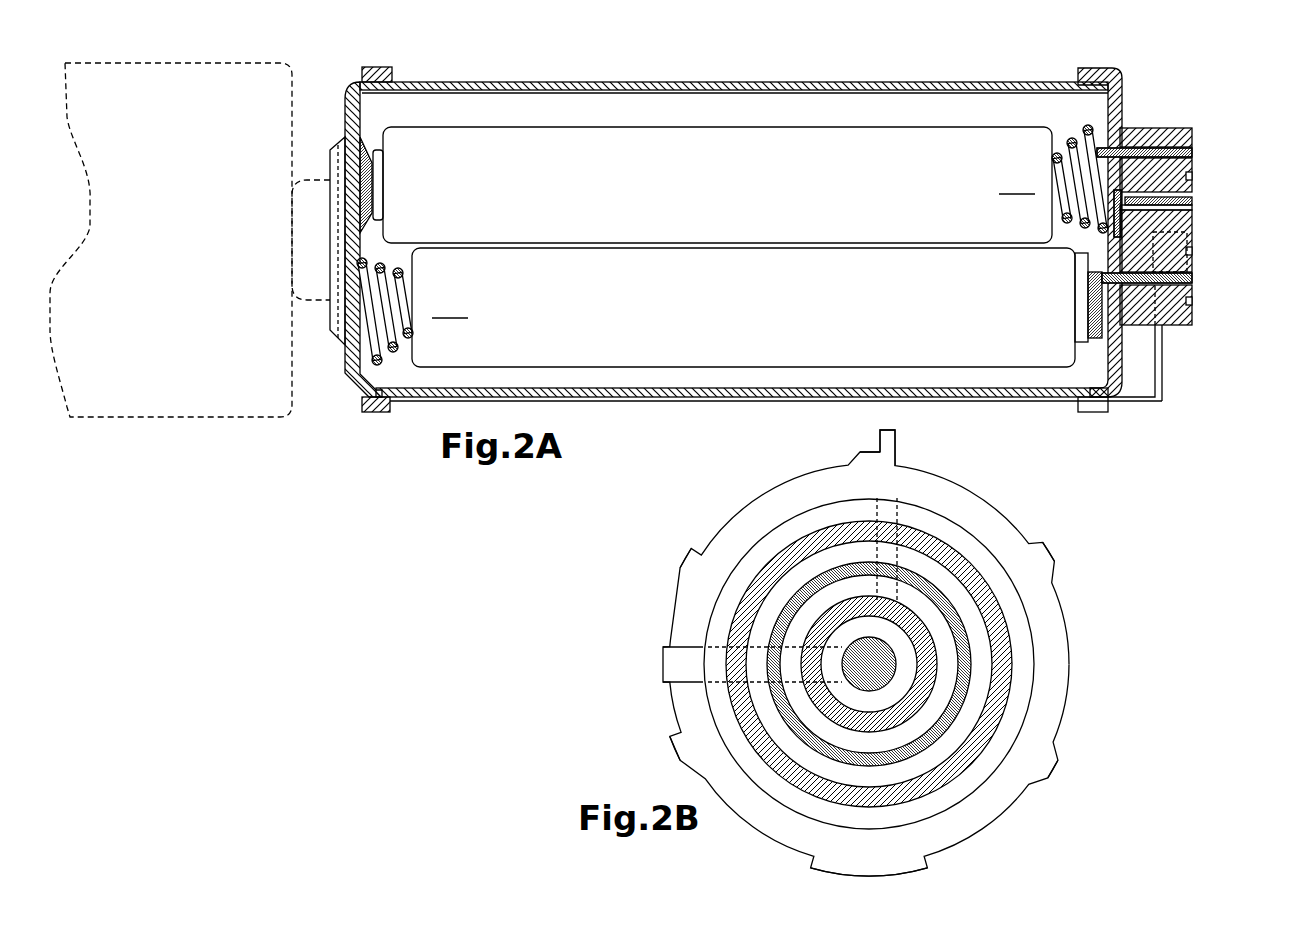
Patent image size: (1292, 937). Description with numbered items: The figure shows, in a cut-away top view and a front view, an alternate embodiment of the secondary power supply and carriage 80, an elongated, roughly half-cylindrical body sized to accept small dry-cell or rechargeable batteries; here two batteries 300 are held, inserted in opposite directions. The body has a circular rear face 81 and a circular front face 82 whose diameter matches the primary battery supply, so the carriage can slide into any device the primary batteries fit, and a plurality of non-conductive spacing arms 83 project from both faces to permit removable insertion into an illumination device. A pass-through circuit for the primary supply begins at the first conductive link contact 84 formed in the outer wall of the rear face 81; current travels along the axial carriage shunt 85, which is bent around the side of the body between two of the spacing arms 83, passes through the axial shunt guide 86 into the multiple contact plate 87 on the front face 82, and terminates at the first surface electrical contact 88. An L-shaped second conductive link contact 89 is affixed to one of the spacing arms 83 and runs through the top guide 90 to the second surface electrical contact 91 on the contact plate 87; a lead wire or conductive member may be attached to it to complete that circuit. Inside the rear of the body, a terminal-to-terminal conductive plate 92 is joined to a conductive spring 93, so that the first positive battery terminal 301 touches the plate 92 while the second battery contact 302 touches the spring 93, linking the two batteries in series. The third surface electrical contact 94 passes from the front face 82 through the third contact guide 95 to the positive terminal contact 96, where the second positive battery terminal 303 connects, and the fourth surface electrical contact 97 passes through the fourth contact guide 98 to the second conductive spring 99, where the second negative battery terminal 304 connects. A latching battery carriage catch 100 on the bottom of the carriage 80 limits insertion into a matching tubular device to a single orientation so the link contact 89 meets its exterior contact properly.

In FIG. 2A, the secondary power supply and carriage 80 is at (675, 62).
In FIG. 2B, the secondary power supply and carriage 80 is at (800, 470).
In FIG. 2A, the circular rear face 81 is at (345, 107).
In FIG. 2A, the circular front face 82 is at (1120, 92).
In FIG. 2B, the circular front face 82 is at (730, 548).
In FIG. 2A, the non-conductive spacing arms 83 is at (378, 66).
In FIG. 2B, the non-conductive spacing arms 83 is at (858, 452).
In FIG. 2A, the first conductive link contact 84 is at (345, 263).
In FIG. 2A, the axial carriage shunt 85 is at (610, 400).
In FIG. 2B, the axial carriage shunt 85 is at (665, 680).
In FIG. 2A, the axial shunt guide 86 is at (1163, 328).
In FIG. 2A, the multiple contact plate 87 is at (1145, 128).
In FIG. 2B, the multiple contact plate 87 is at (795, 538).
In FIG. 2A, the first surface electrical contact 88 is at (1188, 236).
In FIG. 2B, the first surface electrical contact 88 is at (890, 672).
In FIG. 2A, the second conductive link contact 89 is at (1192, 213).
In FIG. 2B, the second conductive link contact 89 is at (895, 432).
In FIG. 2A, the top guide 90 is at (1192, 197).
In FIG. 2A, the second surface electrical contact 91 is at (1192, 206).
In FIG. 2B, the second surface electrical contact 91 is at (895, 728).
In FIG. 2A, the terminal-to-terminal conductive plate 92 is at (362, 140).
In FIG. 2A, the conductive spring 93 is at (378, 362).
In FIG. 2A, the third surface electrical contact 94 is at (1192, 280).
In FIG. 2B, the third surface electrical contact 94 is at (890, 762).
In FIG. 2A, the third contact guide 95 is at (1192, 288).
In FIG. 2A, the positive terminal contact 96 is at (1097, 340).
In FIG. 2A, the fourth surface electrical contact 97 is at (1192, 160).
In FIG. 2B, the fourth surface electrical contact 97 is at (860, 795).
In FIG. 2A, the fourth contact guide 98 is at (1192, 150).
In FIG. 2A, the second conductive spring 99 is at (1072, 127).
In FIG. 2B, the latching battery carriage catch 100 is at (920, 862).
In FIG. 2A, the batteries 300 is at (652, 201).
In FIG. 2A, the first positive battery terminal 301 is at (378, 176).
In FIG. 2A, the second battery contact 302 is at (450, 307).
In FIG. 2A, the second positive battery terminal 303 is at (1082, 300).
In FIG. 2A, the second negative battery terminal 304 is at (1017, 183).